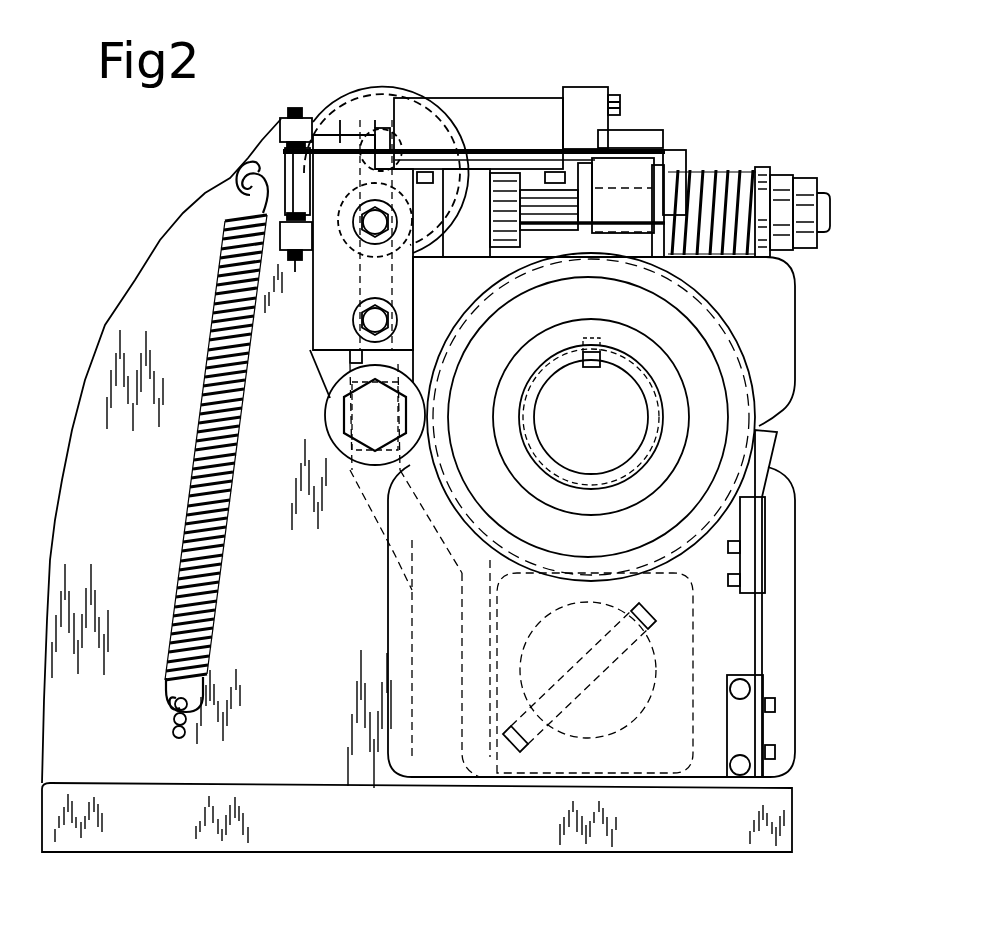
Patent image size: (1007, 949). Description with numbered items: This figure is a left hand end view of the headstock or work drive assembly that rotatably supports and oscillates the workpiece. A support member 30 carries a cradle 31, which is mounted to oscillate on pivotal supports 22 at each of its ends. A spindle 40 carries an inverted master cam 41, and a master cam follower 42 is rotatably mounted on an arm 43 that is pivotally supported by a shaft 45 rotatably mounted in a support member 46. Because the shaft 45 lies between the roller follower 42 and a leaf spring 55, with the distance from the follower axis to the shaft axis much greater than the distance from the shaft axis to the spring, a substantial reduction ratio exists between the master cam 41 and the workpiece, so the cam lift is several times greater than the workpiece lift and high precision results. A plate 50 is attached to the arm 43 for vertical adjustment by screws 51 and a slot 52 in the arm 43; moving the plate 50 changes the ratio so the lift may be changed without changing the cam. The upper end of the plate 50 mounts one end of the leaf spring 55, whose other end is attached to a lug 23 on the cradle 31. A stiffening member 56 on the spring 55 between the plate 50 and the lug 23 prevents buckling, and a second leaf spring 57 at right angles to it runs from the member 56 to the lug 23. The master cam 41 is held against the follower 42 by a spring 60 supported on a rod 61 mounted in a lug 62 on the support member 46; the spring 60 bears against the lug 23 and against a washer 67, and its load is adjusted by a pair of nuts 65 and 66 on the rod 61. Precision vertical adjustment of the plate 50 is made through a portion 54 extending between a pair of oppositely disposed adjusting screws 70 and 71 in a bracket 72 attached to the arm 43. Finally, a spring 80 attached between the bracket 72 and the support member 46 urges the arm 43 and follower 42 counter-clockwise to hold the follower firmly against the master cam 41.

The pivotal supports 22 is at (595, 673).
The lug 23 is at (637, 178).
The support member 30 is at (483, 852).
The cradle 31 is at (677, 260).
The spindle 40 is at (617, 413).
The master cam 41 is at (735, 330).
The master cam follower 42 is at (325, 420).
The arm 43 is at (325, 385).
The shaft 45 is at (347, 157).
The support member 46 is at (140, 265).
The plate 50 is at (318, 326).
The screws 51 is at (354, 222).
The slot 52 is at (350, 356).
The portion 54 is at (297, 160).
The leaf spring 55 is at (385, 128).
The stiffening member 56 is at (443, 98).
The leaf spring 57 is at (592, 87).
The spring 60 is at (700, 172).
The rod 61 is at (826, 232).
The lug 62 is at (473, 257).
The nut 65 is at (781, 177).
The nut 66 is at (800, 180).
The washer 67 is at (760, 167).
The adjusting screw 70 is at (296, 108).
The adjusting screw 71 is at (295, 270).
The bracket 72 is at (281, 122).
The spring 80 is at (232, 232).